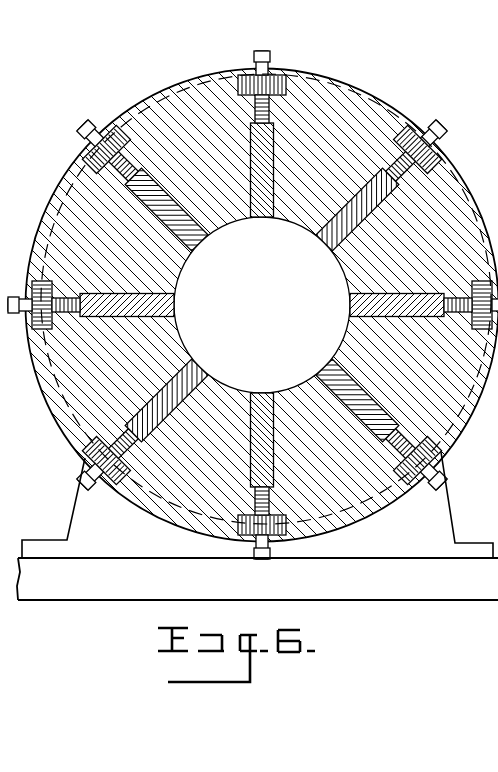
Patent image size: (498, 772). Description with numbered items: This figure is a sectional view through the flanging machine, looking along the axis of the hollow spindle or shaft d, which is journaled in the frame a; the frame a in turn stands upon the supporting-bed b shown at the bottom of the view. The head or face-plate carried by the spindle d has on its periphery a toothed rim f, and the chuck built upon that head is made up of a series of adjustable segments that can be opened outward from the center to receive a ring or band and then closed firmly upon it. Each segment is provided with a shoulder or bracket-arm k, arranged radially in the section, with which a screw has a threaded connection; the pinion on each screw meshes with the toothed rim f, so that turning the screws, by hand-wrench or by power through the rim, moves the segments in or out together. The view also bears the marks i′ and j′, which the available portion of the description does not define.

The hollow spindle or shaft d is at (249, 386).
The shoulder or bracket-arm k is at (201, 236).
The toothed rim f is at (278, 83).
The bolts i′ is at (270, 78).
The ring j′ is at (251, 77).
The frame a is at (257, 505).
The supporting-bed b is at (257, 579).